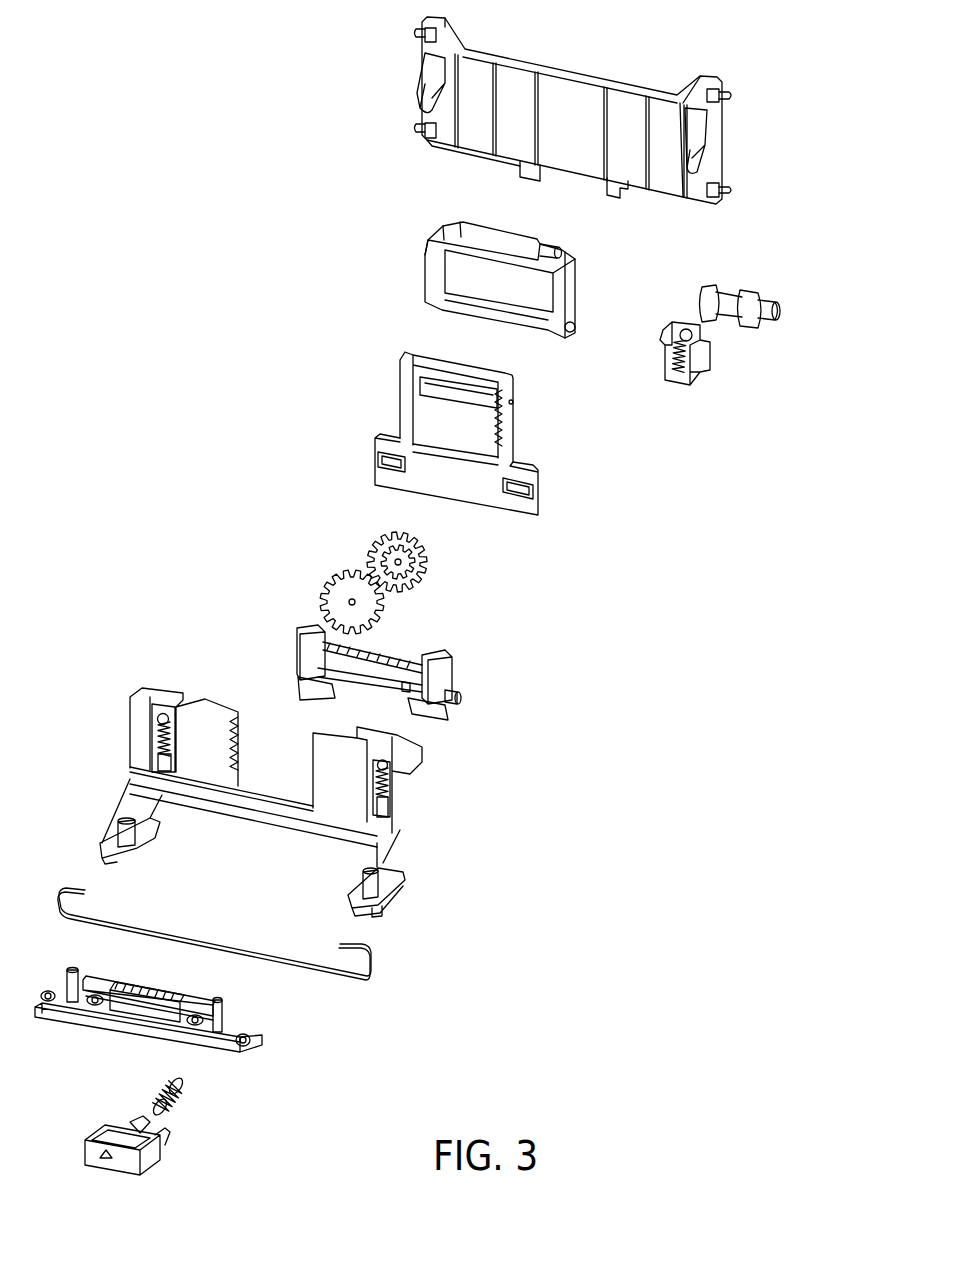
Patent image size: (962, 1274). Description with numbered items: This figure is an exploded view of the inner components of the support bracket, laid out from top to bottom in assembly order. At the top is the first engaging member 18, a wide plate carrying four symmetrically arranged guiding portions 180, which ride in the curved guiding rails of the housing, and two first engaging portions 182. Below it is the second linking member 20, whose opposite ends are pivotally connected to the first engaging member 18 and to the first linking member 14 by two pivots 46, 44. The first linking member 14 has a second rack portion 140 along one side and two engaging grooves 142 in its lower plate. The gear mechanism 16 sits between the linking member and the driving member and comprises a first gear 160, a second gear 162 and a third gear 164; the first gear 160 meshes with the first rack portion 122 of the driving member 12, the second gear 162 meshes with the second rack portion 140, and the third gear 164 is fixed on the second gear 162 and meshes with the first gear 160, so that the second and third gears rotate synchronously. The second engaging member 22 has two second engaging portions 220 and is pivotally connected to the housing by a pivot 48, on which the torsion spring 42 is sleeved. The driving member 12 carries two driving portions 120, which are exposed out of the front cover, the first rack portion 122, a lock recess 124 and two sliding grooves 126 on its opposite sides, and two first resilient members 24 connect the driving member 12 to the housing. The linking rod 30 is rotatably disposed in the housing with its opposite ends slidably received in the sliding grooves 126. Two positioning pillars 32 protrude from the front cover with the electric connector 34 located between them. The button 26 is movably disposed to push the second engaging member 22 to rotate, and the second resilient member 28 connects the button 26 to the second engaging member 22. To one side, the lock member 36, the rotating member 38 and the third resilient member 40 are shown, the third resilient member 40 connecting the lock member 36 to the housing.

The driving member 12 is at (130, 748).
The driving portions 120 is at (118, 830).
The first rack portion 122 is at (240, 722).
The lock recess 124 is at (395, 840).
The sliding grooves 126 is at (409, 918).
The first linking member 14 is at (400, 390).
The second rack portion 140 is at (503, 410).
The engaging grooves 142 is at (521, 510).
The gear mechanism 16 is at (330, 462).
The first gear 160 is at (325, 582).
The second gear 162 is at (405, 530).
The third gear 164 is at (378, 552).
The first engaging member 18 is at (570, 68).
The guiding portions 180 is at (416, 31).
The first engaging portions 182 is at (428, 72).
The second linking member 20 is at (428, 270).
The second engaging member 22 is at (413, 655).
The second engaging portions 220 is at (452, 662).
The first resilient members 24 is at (157, 736).
The button 26 is at (152, 1165).
The second resilient member 28 is at (182, 1100).
The linking rod 30 is at (330, 975).
The positioning pillars 32 is at (68, 982).
The electric connector 34 is at (133, 1002).
The lock member 36 is at (705, 375).
The rotating member 38 is at (742, 290).
The third resilient member 40 is at (672, 372).
The torsion spring 42 is at (407, 690).
The pivot 44 is at (574, 331).
The pivot 46 is at (562, 250).
The pivot 48 is at (462, 697).